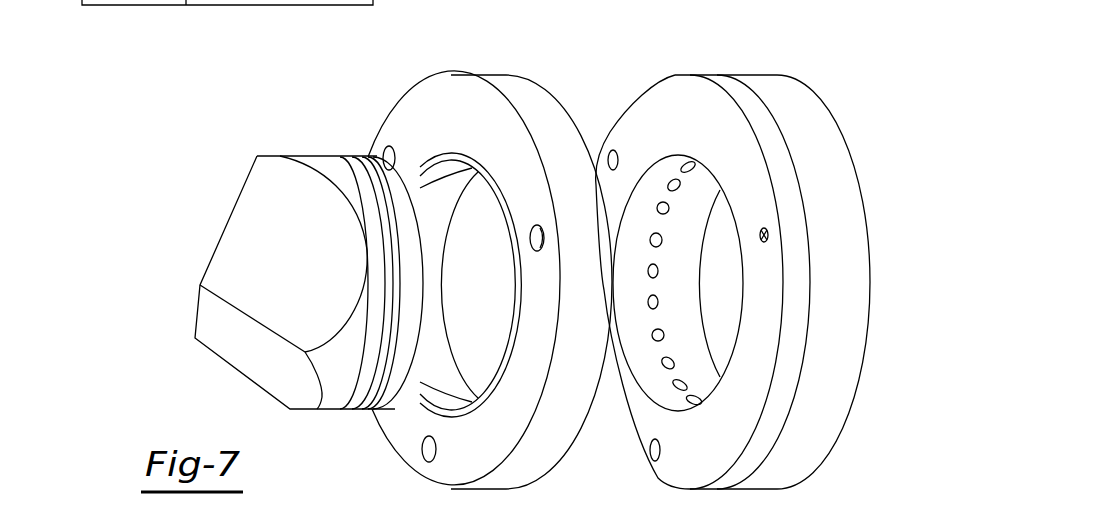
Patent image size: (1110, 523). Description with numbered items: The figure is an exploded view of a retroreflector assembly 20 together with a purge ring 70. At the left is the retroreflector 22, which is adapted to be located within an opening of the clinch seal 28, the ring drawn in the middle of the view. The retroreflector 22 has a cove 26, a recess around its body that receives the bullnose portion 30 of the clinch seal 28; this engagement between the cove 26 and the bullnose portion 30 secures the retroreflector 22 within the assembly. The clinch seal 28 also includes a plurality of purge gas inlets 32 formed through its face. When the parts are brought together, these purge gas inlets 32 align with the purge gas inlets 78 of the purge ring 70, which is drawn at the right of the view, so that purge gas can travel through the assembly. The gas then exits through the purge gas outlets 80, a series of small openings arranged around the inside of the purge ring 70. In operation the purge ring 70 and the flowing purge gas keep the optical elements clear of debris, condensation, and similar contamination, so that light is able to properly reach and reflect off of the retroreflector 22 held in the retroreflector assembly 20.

The retroreflector assembly 20 is at (263, 237).
The retroreflector 22 is at (212, 356).
The cove 26 is at (367, 182).
The clinch seal 28 is at (471, 265).
The bullnose portion 30 is at (445, 398).
The purge gas inlets 32 is at (537, 238).
The purge ring 70 is at (744, 283).
The purge gas inlets 78 is at (768, 234).
The purge gas outlets 80 is at (680, 380).